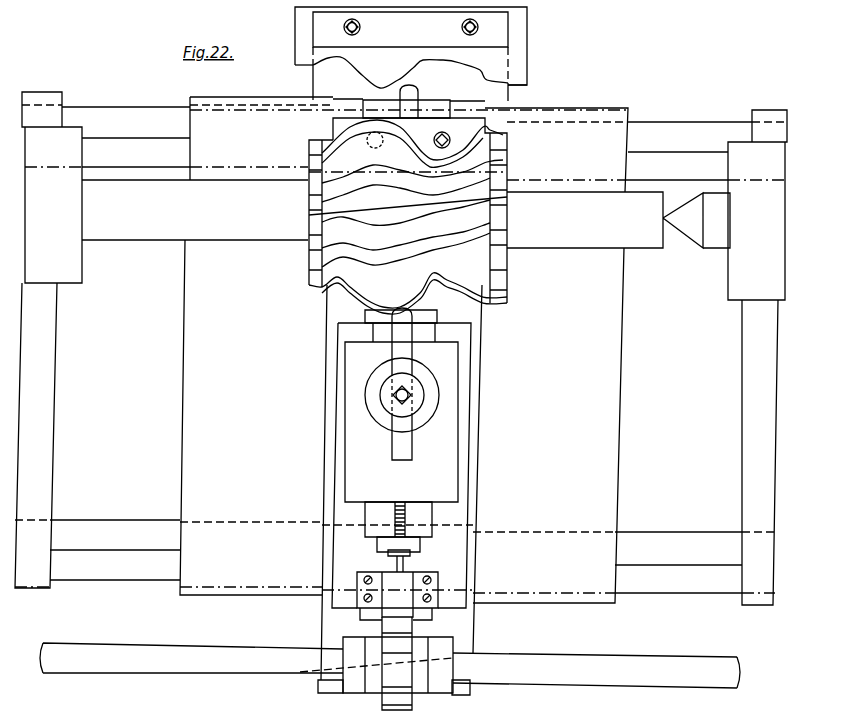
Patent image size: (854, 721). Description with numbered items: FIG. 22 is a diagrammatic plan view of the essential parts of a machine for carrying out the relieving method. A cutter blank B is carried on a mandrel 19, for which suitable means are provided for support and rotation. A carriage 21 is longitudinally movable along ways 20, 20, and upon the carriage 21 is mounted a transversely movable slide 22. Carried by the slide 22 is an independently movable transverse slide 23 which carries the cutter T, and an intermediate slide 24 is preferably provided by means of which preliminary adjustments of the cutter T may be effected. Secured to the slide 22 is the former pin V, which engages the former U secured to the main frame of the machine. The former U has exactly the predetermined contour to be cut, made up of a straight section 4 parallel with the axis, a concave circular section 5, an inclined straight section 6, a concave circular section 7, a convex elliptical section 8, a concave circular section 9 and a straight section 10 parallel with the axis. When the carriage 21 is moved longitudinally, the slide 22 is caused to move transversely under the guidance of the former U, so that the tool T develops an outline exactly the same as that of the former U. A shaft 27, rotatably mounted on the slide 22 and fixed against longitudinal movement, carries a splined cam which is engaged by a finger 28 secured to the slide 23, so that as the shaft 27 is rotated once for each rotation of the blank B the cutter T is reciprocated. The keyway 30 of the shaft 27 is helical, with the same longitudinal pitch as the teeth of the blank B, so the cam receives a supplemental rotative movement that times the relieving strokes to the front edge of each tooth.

The straight section 4 is at (517, 74).
The concave section 5 is at (485, 72).
The straight section 6 is at (455, 62).
The concave section 7 is at (420, 58).
The convex section 8 is at (378, 73).
The concave section 9 is at (340, 60).
The straight section 10 is at (306, 54).
The former U is at (528, 57).
The former pin V is at (420, 97).
The cutter blank B is at (507, 158).
The cutter T is at (410, 337).
The mandrel 19 is at (250, 238).
The ways 20 is at (685, 127).
The carriage 21 is at (607, 389).
The slide 22 is at (482, 452).
The transverse slide 23 is at (467, 414).
The intermediate slide 24 is at (455, 379).
The shaft 27 is at (210, 667).
The finger 28 is at (400, 597).
The keyway 30 is at (343, 667).